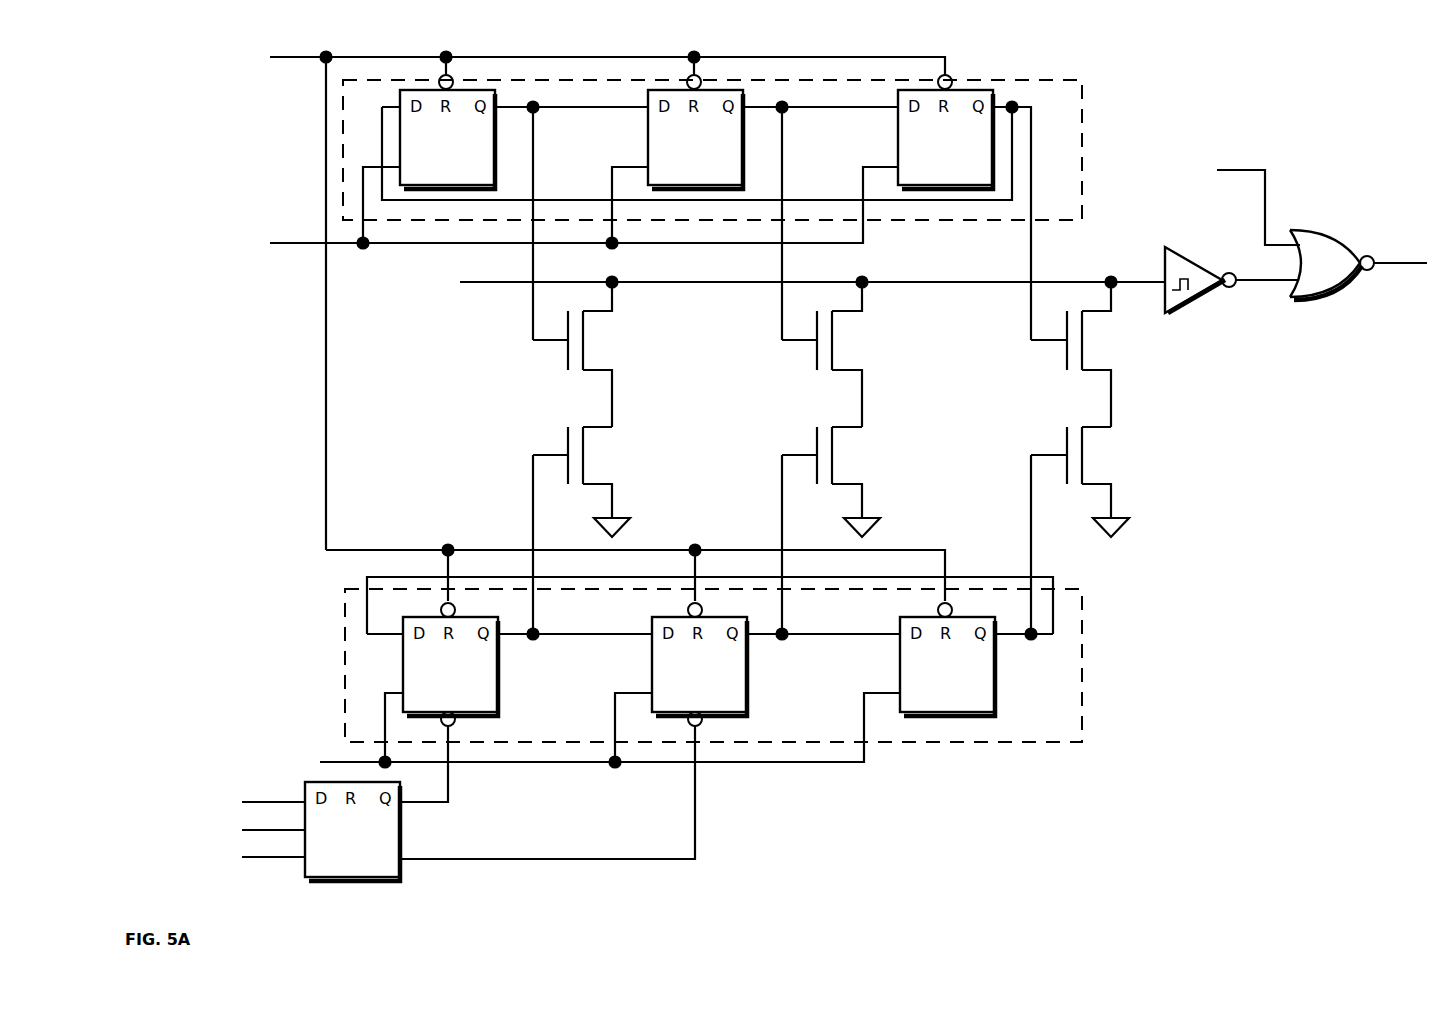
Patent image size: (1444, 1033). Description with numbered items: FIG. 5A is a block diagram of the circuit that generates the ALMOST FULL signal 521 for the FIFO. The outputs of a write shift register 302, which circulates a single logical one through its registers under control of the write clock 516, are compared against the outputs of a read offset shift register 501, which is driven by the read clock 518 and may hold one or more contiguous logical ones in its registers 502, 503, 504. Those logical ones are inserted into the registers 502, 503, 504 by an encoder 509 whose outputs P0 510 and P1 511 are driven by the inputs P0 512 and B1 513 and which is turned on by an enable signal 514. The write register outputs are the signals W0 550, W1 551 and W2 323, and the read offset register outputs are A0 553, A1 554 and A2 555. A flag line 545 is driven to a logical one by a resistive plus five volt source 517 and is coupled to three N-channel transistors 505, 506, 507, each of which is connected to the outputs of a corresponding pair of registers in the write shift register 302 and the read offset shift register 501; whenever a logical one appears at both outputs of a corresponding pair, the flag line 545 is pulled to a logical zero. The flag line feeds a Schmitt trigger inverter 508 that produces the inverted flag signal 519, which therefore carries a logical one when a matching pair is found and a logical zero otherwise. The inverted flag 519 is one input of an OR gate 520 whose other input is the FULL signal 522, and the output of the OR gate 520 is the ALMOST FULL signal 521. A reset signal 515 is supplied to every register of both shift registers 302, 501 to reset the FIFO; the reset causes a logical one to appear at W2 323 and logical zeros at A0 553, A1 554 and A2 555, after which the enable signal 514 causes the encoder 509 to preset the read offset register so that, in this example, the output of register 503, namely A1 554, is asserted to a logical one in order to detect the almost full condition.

The reset signal 515 is at (268, 46).
The write clock 516 is at (555, 221).
The resistive +5 volts source 517 is at (784, 292).
The flag signal 545 is at (491, 292).
The write shift register 302 is at (712, 147).
The register output W0 550 is at (557, 109).
The register output W1 551 is at (807, 109).
The write pointer bit W2 323 is at (1041, 118).
The N-Channel transistor 505 is at (614, 395).
The N-Channel transistor 506 is at (864, 395).
The N-Channel transistor 507 is at (1113, 395).
The Schmitt trigger inverter 508 is at (1200, 258).
The inverted flag signal 519 is at (1276, 292).
The FULL signal 522 is at (1236, 197).
The OR gate 520 is at (1332, 265).
The ALMOST FULL signal 521 is at (1388, 247).
The read offset shift register 501 is at (713, 659).
The register 502 is at (450, 664).
The register 503 is at (699, 664).
The register 504 is at (947, 659).
The register output A0 553 is at (553, 636).
The register output A1 554 is at (803, 636).
The register output A2 555 is at (1013, 636).
The read clock 518 is at (585, 730).
The encoder 509 is at (352, 831).
The encoder output P0 510 is at (478, 808).
The encoder output P1 511 is at (468, 842).
The encoder input P0 512 is at (243, 788).
The encoder input B1 513 is at (210, 816).
The enable signal 514 is at (210, 848).